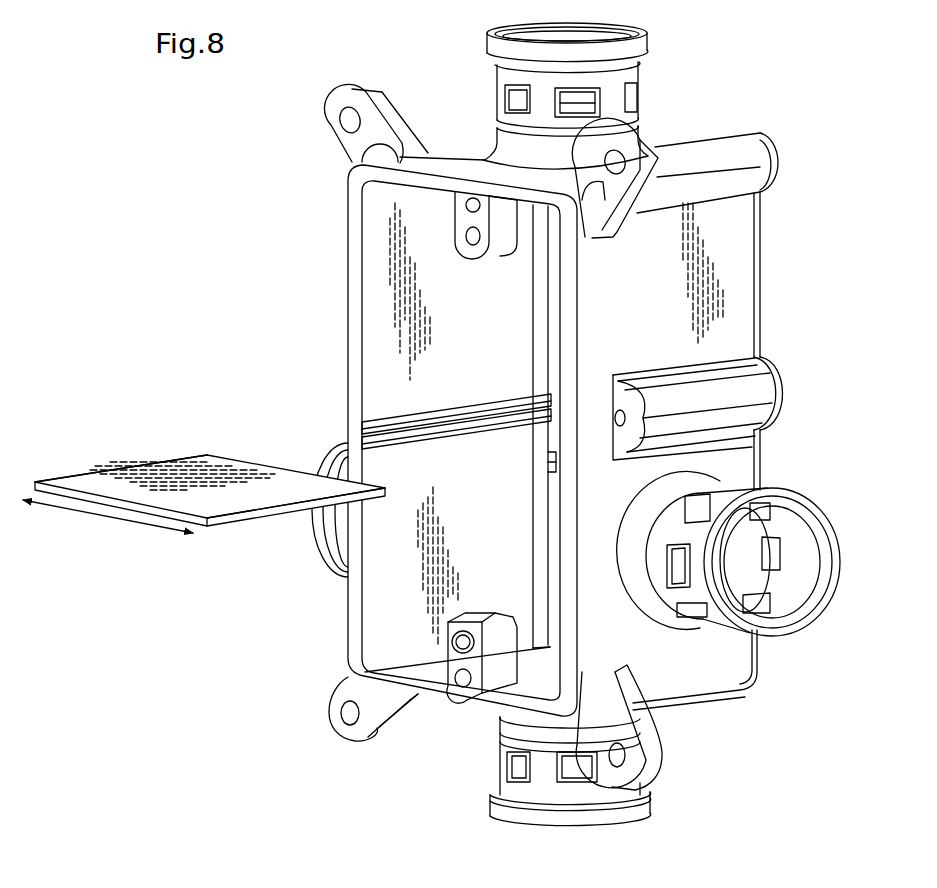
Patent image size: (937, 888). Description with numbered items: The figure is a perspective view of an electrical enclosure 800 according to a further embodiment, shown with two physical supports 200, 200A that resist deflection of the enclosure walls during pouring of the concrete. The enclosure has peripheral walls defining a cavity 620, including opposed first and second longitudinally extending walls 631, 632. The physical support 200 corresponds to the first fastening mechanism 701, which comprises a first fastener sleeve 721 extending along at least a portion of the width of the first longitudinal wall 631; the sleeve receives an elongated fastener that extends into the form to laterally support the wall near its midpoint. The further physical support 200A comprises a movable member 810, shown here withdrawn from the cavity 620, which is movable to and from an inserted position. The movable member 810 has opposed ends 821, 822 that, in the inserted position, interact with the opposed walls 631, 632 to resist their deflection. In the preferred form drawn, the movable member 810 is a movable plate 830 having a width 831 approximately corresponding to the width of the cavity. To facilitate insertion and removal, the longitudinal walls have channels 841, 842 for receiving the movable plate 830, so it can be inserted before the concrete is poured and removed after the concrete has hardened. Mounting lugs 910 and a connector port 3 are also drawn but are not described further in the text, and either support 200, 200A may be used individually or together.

The top connector port 3 is at (652, 48).
The physical support 200 is at (765, 438).
The further physical support 200A is at (180, 608).
The cavity 620 is at (375, 367).
The first longitudinally extending wall 631 is at (576, 300).
The second longitudinally extending wall 632 is at (345, 325).
The first fastening mechanism 701 is at (772, 411).
The first fastener sleeve 721 is at (724, 371).
The electrical enclosure 800 is at (447, 758).
The movable member 810 is at (167, 426).
The opposed end 821 is at (241, 537).
The opposed end 822 is at (64, 466).
The movable plate 830 is at (136, 544).
The width 831 is at (79, 528).
The channel 841 is at (553, 493).
The channel 842 is at (353, 423).
The mounting lug 910 is at (322, 139).